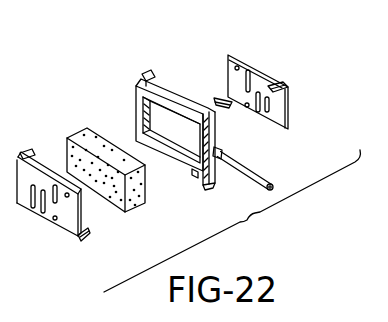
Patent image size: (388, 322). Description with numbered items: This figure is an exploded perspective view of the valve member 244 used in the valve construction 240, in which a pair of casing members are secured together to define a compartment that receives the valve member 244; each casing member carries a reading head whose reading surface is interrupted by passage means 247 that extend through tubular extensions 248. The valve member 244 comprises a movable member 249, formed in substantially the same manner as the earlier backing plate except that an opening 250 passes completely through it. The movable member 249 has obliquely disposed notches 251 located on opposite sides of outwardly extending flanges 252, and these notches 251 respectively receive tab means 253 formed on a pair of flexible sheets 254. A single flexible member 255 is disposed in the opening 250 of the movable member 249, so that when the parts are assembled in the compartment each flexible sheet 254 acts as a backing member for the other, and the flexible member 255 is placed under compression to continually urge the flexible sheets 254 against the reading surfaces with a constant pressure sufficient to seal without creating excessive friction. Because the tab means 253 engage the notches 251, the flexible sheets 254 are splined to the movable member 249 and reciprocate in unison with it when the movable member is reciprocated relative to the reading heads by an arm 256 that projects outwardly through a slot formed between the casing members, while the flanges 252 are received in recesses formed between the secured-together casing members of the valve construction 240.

The valve construction 240 is at (7, 44).
The valve member 244 is at (82, 46).
The passage means 247 is at (15, 106).
The tubular extensions 248 is at (11, 143).
The movable member 249 is at (134, 102).
The opening 250 is at (172, 124).
The obliquely disposed notches 251 is at (150, 83).
The outwardly extending flanges 252 is at (188, 103).
The tab means 253 is at (30, 152).
The flexible sheets 254 is at (25, 177).
The flexible member 255 is at (79, 129).
The arm 256 is at (245, 173).